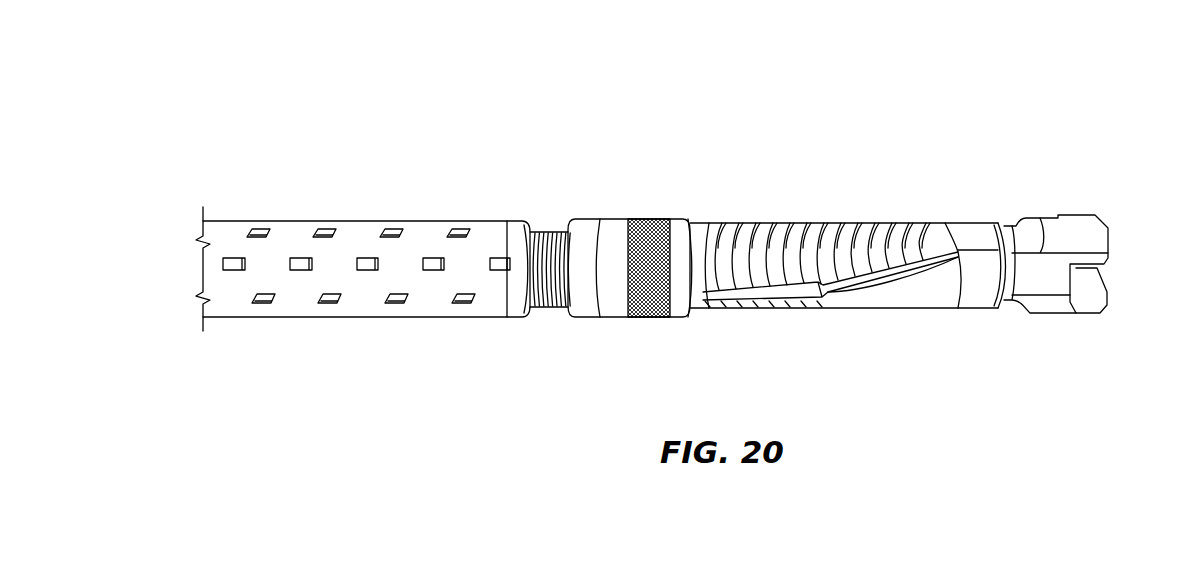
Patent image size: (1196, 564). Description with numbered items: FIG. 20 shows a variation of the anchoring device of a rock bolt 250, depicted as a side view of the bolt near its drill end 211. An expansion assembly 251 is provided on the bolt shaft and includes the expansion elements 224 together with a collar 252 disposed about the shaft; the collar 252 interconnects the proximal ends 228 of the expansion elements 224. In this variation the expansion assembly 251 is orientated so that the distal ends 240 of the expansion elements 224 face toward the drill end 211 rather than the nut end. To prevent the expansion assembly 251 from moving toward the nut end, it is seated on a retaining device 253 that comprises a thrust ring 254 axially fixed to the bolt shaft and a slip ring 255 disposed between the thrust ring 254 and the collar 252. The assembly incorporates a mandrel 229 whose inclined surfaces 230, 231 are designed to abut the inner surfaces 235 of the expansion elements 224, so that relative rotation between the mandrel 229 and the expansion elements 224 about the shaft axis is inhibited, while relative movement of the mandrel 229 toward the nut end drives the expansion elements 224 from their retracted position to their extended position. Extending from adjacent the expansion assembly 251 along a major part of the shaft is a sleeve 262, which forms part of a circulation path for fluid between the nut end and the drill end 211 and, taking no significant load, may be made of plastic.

The drill end 211 is at (1052, 348).
The expansion elements 224 is at (837, 237).
The proximal ends 228 is at (708, 230).
The mandrel 229 is at (893, 292).
The inclined surface 230 is at (942, 230).
The inclined surface 231 is at (948, 262).
The inner surfaces 235 is at (806, 297).
The distal ends 240 is at (910, 225).
The rock bolt 250 is at (810, 240).
The expansion assembly 251 is at (727, 160).
The collar 252 is at (602, 314).
The retaining device 253 is at (577, 160).
The thrust ring 254 is at (602, 312).
The slip ring 255 is at (608, 303).
The sleeve 262 is at (503, 307).